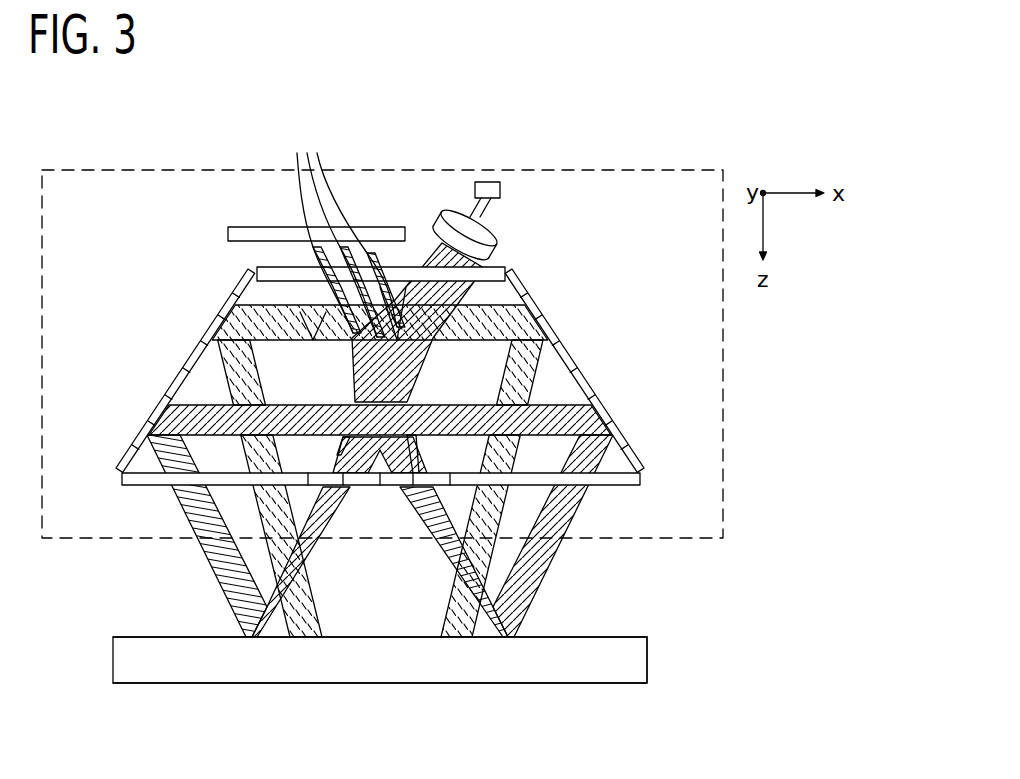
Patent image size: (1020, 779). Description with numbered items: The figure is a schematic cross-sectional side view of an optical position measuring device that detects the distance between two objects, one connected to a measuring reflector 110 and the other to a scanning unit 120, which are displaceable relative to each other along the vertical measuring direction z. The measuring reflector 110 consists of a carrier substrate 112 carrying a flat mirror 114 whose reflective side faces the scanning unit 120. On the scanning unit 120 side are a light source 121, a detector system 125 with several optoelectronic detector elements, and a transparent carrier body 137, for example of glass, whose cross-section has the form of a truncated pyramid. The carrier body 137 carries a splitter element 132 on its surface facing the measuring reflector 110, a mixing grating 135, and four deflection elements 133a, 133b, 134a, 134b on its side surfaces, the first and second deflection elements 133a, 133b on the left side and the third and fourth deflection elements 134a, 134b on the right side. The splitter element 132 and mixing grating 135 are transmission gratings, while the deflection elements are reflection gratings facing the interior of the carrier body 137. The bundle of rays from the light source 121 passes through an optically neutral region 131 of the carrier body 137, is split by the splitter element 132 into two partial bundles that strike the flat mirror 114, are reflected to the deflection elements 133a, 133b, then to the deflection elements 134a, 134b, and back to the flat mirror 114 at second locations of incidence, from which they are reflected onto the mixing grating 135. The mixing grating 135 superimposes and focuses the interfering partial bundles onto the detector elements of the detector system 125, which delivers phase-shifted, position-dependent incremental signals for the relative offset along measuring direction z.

The measuring reflector 110 is at (246, 684).
The carrier substrate 112 is at (630, 660).
The flat mirror 114 is at (577, 637).
The scanning unit 120 is at (725, 468).
The light source 121 is at (500, 190).
The detector system 125 is at (348, 231).
The optically neutral region 131 is at (473, 281).
The splitter element 132 is at (360, 489).
The first deflection element 133a is at (215, 331).
The second deflection element 133b is at (157, 420).
The third deflection element 134a is at (544, 330).
The fourth deflection element 134b is at (604, 418).
The mixing grating 135 is at (412, 476).
The carrier body 137 is at (544, 452).